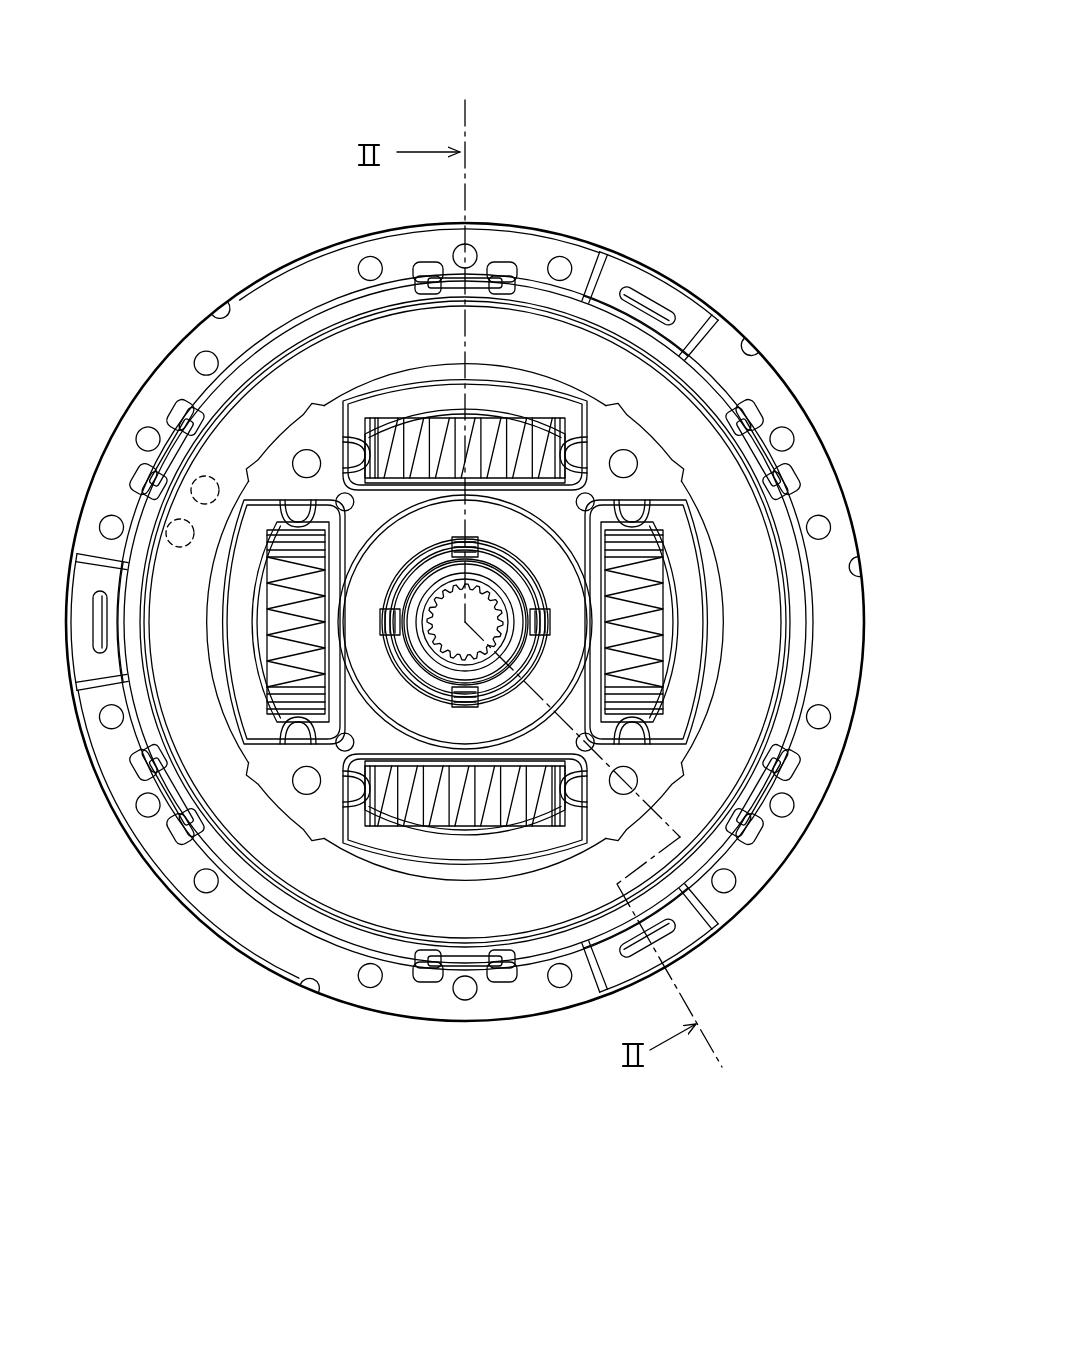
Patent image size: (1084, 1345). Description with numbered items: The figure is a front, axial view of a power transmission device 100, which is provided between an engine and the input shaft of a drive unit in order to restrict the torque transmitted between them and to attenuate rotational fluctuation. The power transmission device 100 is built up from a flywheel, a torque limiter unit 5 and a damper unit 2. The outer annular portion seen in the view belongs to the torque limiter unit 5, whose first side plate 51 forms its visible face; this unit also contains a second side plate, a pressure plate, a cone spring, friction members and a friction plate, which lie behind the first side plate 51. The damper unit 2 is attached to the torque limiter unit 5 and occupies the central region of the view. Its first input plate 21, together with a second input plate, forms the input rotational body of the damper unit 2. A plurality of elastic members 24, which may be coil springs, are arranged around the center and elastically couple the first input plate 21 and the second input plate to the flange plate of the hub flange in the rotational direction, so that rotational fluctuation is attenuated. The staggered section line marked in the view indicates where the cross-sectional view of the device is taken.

The power transmission device 100 is at (806, 128).
The torque limiter unit 5 is at (836, 437).
The first side plate 51 is at (760, 374).
The damper unit 2 is at (732, 625).
The first input plate 21 is at (688, 664).
The elastic members 24 is at (645, 598).